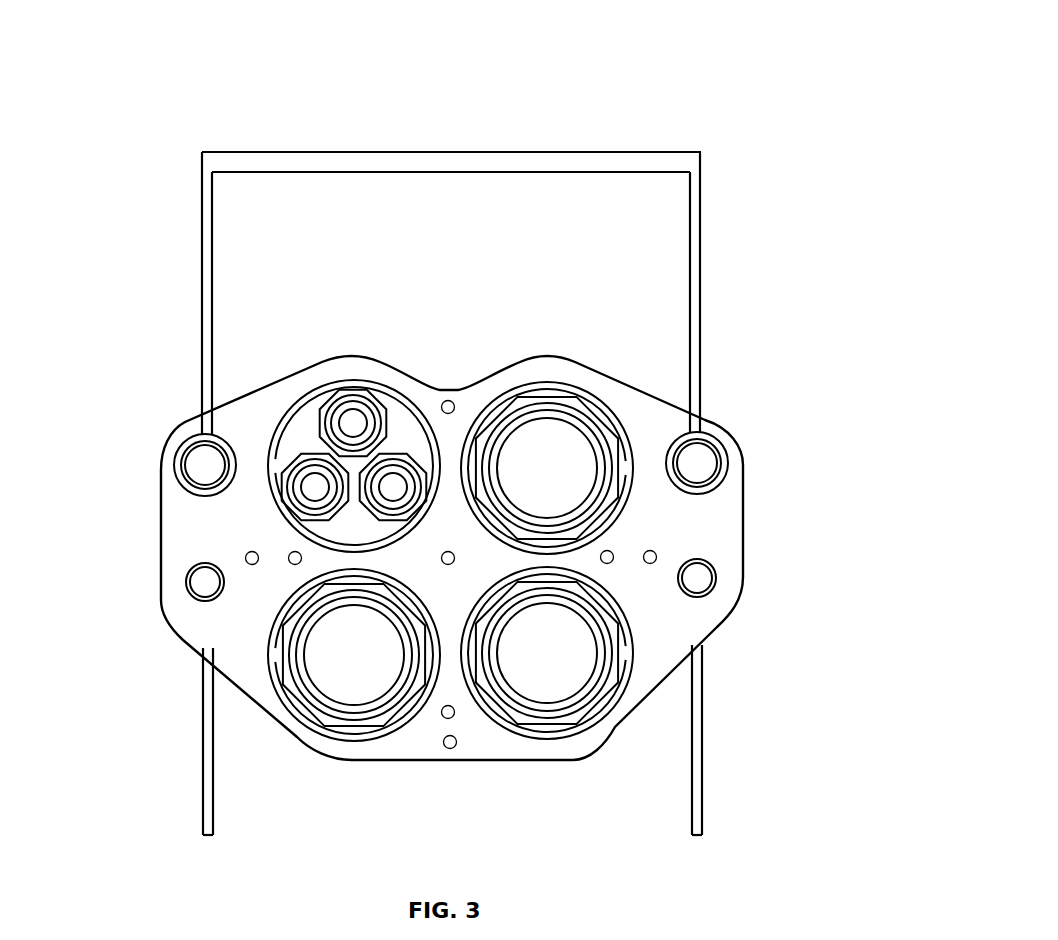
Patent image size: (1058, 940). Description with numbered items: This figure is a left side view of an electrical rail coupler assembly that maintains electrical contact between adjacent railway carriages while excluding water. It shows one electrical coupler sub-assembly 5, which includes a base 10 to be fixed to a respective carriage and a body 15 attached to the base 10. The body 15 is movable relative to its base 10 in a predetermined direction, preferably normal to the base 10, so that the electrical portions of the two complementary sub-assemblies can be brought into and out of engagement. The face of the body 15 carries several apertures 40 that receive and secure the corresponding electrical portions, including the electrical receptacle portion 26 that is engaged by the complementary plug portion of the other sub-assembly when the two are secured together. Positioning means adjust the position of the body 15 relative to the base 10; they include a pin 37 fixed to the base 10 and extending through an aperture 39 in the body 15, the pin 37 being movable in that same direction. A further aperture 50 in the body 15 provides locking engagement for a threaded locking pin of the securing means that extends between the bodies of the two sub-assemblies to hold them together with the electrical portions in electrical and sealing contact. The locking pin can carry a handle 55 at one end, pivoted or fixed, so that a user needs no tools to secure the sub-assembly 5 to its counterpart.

The electrical coupler sub-assembly 5 is at (600, 93).
The base 10 is at (735, 237).
The body 15 is at (800, 533).
The electrical receptacle portion 26 is at (347, 673).
The pin 37 is at (210, 466).
The aperture 39 is at (705, 462).
The aperture 40 is at (557, 737).
The aperture 50 is at (705, 578).
The handle 55 is at (203, 762).